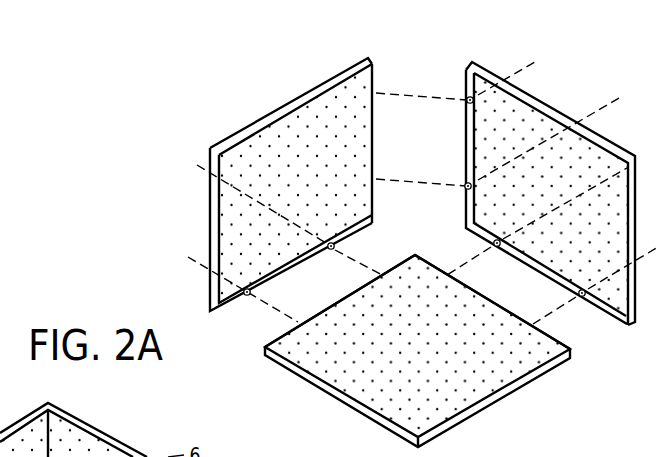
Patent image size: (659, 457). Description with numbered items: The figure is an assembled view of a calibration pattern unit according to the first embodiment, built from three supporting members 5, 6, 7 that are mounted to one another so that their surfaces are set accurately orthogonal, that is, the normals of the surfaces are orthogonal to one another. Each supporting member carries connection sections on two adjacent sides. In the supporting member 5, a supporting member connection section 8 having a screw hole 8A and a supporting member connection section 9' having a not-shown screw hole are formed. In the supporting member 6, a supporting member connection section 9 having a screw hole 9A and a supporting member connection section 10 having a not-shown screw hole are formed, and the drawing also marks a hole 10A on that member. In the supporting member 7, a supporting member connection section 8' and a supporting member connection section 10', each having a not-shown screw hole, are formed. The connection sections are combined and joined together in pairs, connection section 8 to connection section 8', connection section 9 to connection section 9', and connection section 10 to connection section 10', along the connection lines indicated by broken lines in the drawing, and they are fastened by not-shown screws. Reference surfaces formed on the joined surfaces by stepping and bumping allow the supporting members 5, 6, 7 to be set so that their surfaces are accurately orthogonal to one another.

The supporting member 5 is at (253, 145).
The supporting member 6 is at (560, 158).
The supporting member 7 is at (500, 370).
The supporting member connection section 8 is at (222, 321).
The screw hole 8A is at (332, 250).
The supporting member connection section 8' is at (320, 323).
The supporting member connection section 9 is at (450, 74).
The screw hole 9A is at (466, 189).
The supporting member connection section 9' is at (382, 118).
The supporting member connection section 10 is at (601, 331).
The hole in second side panel 10A is at (498, 247).
The supporting member connection section 10' is at (505, 340).